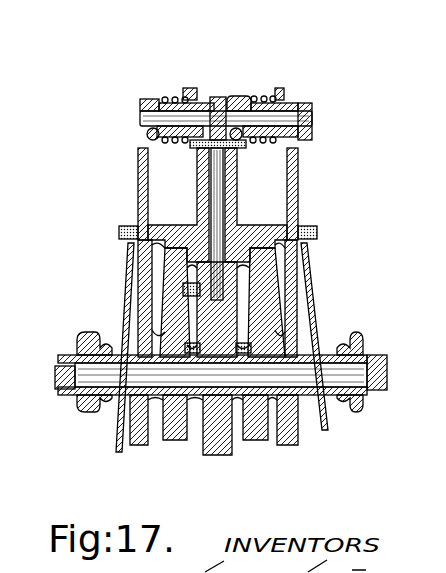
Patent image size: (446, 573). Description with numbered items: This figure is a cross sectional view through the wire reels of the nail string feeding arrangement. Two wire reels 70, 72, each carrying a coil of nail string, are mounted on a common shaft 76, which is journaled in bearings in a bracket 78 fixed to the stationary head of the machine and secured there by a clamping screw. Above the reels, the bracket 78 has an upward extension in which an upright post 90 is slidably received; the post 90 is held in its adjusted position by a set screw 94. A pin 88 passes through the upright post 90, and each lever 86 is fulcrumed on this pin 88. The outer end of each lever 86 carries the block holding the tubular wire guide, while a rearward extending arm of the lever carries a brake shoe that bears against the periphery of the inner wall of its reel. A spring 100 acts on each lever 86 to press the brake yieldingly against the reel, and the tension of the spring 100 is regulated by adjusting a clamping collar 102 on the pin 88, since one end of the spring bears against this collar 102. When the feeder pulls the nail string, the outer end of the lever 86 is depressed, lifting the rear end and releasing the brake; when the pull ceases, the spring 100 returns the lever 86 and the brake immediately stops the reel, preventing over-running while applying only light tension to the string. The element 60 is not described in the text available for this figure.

The housing shell 60 is at (164, 347).
The wire reel 70 is at (138, 190).
The wire reel 72 is at (299, 178).
The shaft 76 is at (85, 378).
The bracket 78 is at (215, 448).
The lever 86 is at (195, 91).
The pin 88 is at (309, 117).
The upright post 90 is at (214, 178).
The set screw 94 is at (187, 287).
The spring 100 is at (163, 98).
The clamping collar 102 is at (143, 100).